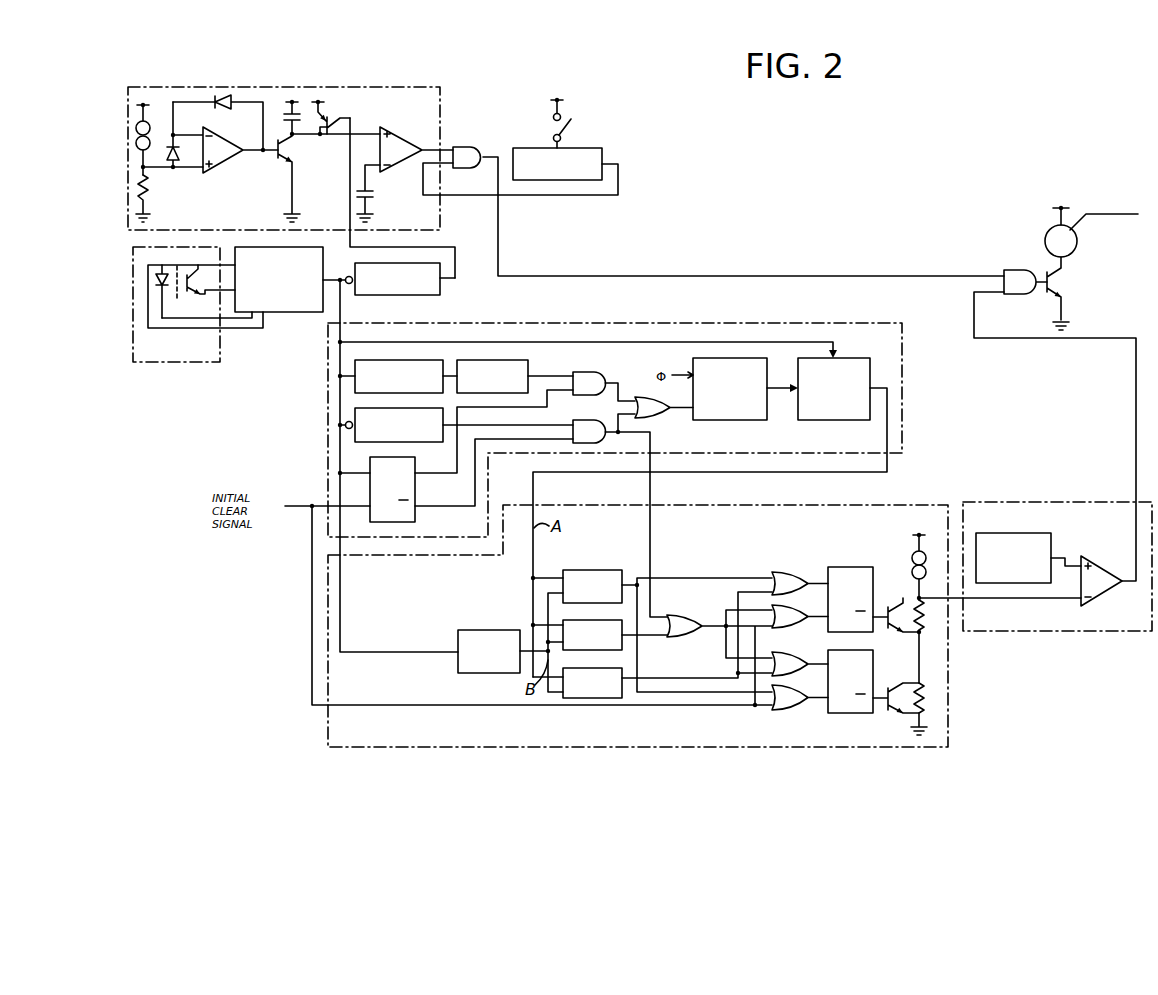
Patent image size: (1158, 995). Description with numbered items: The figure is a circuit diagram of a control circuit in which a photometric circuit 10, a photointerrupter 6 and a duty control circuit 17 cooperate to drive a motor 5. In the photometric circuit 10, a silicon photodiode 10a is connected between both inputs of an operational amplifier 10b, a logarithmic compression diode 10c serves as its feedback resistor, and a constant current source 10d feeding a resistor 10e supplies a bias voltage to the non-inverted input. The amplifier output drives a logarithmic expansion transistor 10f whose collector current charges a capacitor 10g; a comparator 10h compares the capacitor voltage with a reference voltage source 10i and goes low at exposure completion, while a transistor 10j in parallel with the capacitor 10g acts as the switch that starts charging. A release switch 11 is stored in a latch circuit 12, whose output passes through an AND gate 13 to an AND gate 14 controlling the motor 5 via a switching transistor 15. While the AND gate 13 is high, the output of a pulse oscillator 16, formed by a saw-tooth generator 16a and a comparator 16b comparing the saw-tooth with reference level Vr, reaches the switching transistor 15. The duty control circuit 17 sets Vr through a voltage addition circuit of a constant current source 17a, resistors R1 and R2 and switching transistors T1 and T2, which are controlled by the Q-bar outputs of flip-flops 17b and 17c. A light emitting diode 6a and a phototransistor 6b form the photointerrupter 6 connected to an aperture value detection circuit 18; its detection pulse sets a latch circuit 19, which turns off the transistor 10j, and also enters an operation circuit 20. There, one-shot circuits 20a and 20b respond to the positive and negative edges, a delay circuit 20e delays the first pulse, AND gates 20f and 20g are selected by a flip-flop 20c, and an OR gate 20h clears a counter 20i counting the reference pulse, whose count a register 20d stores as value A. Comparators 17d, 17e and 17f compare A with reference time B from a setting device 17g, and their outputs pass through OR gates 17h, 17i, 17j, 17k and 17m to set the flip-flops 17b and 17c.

The motor 5 is at (1077, 236).
The photointerrupter 6 is at (208, 363).
The light emitting diode 6a is at (158, 279).
The phototransistor 6b is at (196, 293).
The photometric circuit 10 is at (441, 136).
The silicon photodiode 10a is at (173, 134).
The operational amplifier 10b is at (225, 166).
The logarithmic compression diode 10c is at (224, 95).
The constant current source 10d is at (136, 128).
The resistor 10e is at (137, 184).
The logarithmic expansion transistor 10f is at (277, 160).
The capacitor 10g is at (289, 111).
The comparator 10h is at (405, 131).
The reference voltage source 10i is at (372, 197).
The transistor 10j is at (322, 117).
The release switch 11 is at (570, 126).
The latch circuit 12 is at (604, 149).
The AND gate 13 is at (473, 147).
The AND gate 14 is at (1010, 270).
The switching transistor 15 is at (1047, 300).
The pulse oscillator 16 is at (983, 501).
The saw-tooth generator 16a is at (1020, 533).
The comparator 16b is at (1100, 556).
The duty control circuit 17 is at (652, 748).
The constant current source 17a is at (912, 552).
The flip-flop 17b is at (850, 567).
The flip-flop 17c is at (857, 713).
The comparator 17d is at (601, 570).
The comparator 17e is at (623, 643).
The comparator 17f is at (607, 698).
The setting device 17g is at (497, 629).
The OR gate 17h is at (680, 615).
The OR gate 17i is at (779, 572).
The OR gate 17j is at (800, 605).
The OR gate 17k is at (783, 652).
The OR gate 17m is at (802, 710).
The aperture value detection circuit 18 is at (296, 313).
The latch circuit 19 is at (440, 292).
The operation circuit 20 is at (862, 323).
The one-shot circuit 20a is at (354, 388).
The one-shot circuit 20b is at (354, 438).
The flip-flop 20c is at (370, 462).
The register 20d is at (810, 358).
The delay circuit 20e is at (518, 360).
The AND gate 20f is at (586, 372).
The AND gate 20g is at (588, 420).
The OR gate 20h is at (643, 397).
The counter 20i is at (715, 358).
The switching transistor T1 is at (896, 626).
The switching transistor T2 is at (896, 711).
The resistor R1 is at (929, 615).
The resistor R2 is at (928, 709).